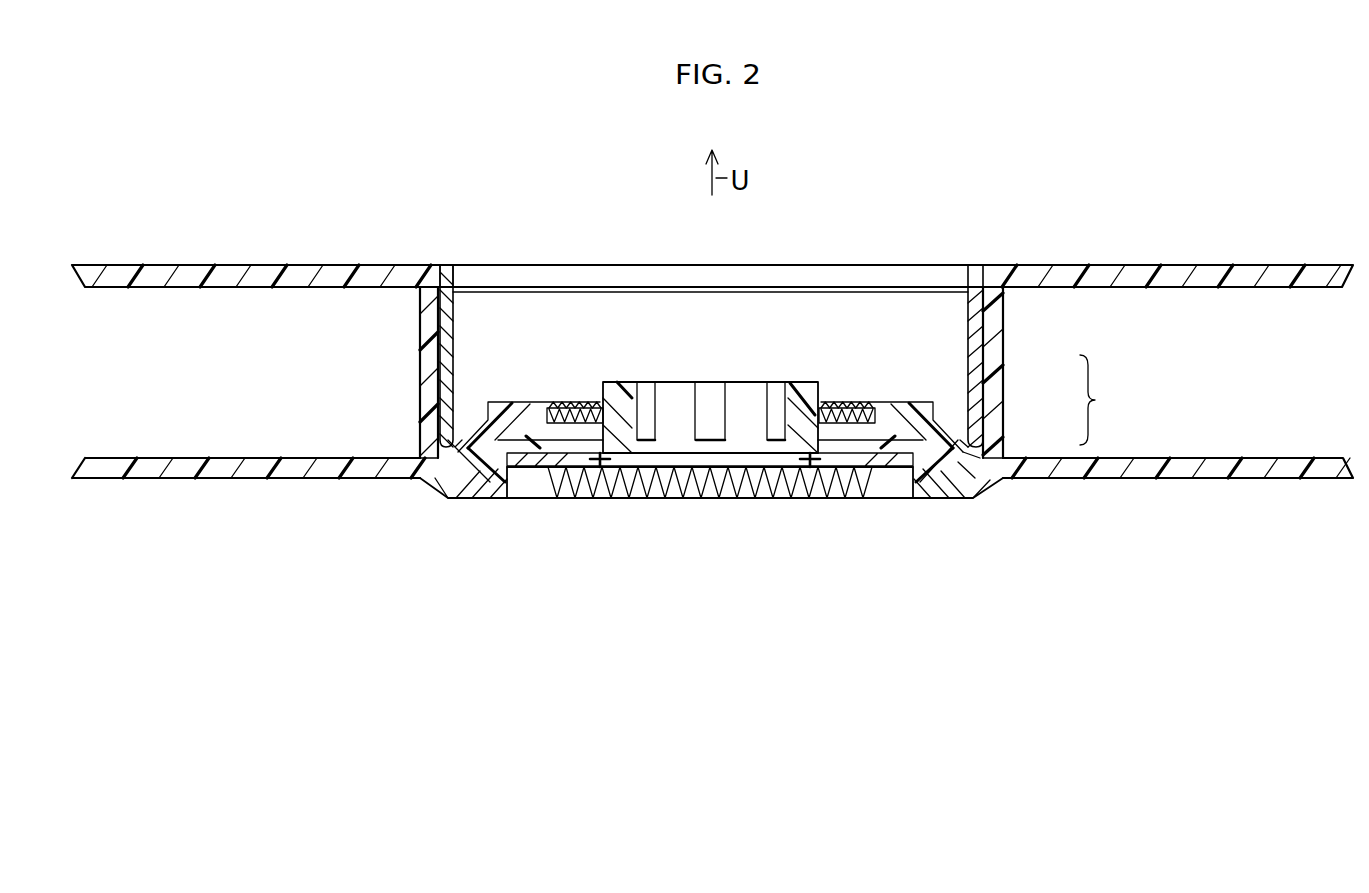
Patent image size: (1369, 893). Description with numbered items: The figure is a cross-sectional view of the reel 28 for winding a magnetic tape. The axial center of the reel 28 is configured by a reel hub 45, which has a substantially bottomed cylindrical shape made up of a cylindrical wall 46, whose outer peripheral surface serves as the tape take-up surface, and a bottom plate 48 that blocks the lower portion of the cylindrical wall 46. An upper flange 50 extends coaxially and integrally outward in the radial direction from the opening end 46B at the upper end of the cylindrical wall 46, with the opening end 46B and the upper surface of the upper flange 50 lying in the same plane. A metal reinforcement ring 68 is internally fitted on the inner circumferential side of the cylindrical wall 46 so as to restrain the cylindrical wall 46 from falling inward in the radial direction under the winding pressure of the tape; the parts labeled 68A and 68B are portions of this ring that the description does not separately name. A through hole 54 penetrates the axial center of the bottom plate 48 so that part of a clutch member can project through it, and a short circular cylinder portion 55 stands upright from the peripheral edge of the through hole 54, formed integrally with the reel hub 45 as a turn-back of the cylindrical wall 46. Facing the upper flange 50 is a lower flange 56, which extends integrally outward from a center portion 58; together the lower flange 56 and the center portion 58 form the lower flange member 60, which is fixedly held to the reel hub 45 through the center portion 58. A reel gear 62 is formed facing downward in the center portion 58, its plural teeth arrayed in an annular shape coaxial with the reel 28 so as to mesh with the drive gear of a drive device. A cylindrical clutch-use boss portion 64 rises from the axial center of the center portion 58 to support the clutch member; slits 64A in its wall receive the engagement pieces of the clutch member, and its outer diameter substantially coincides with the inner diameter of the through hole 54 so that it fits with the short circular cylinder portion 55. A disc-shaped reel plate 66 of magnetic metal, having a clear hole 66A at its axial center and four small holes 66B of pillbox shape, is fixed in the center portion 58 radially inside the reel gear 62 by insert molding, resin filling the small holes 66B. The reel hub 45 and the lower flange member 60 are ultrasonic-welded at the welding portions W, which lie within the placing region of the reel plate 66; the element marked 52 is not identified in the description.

The reel 28 is at (1091, 195).
The reel hub 45 is at (1106, 400).
The cylindrical wall 46 is at (1005, 375).
The opening end 46B is at (481, 271).
The bottom plate 48 is at (1005, 447).
The upper flange 50 is at (1218, 268).
The clamp plate 52 is at (548, 405).
The through hole 54 is at (795, 412).
The short circular cylinder portion 55 is at (815, 412).
The lower flange 56 is at (1222, 480).
The center portion 58 is at (965, 485).
The lower flange member 60 is at (355, 496).
The reel gear 62 is at (704, 499).
The clutch-use boss portion 64 is at (665, 395).
The slits 64A is at (645, 392).
The reel plate 66 is at (537, 482).
The clear hole 66A is at (655, 499).
The small holes 66B is at (595, 467).
The reinforcement ring 68 is at (957, 303).
The upper end of inner wall 68A is at (442, 265).
The lower bent end of inner wall 68B is at (446, 455).
The welding portions W is at (567, 405).